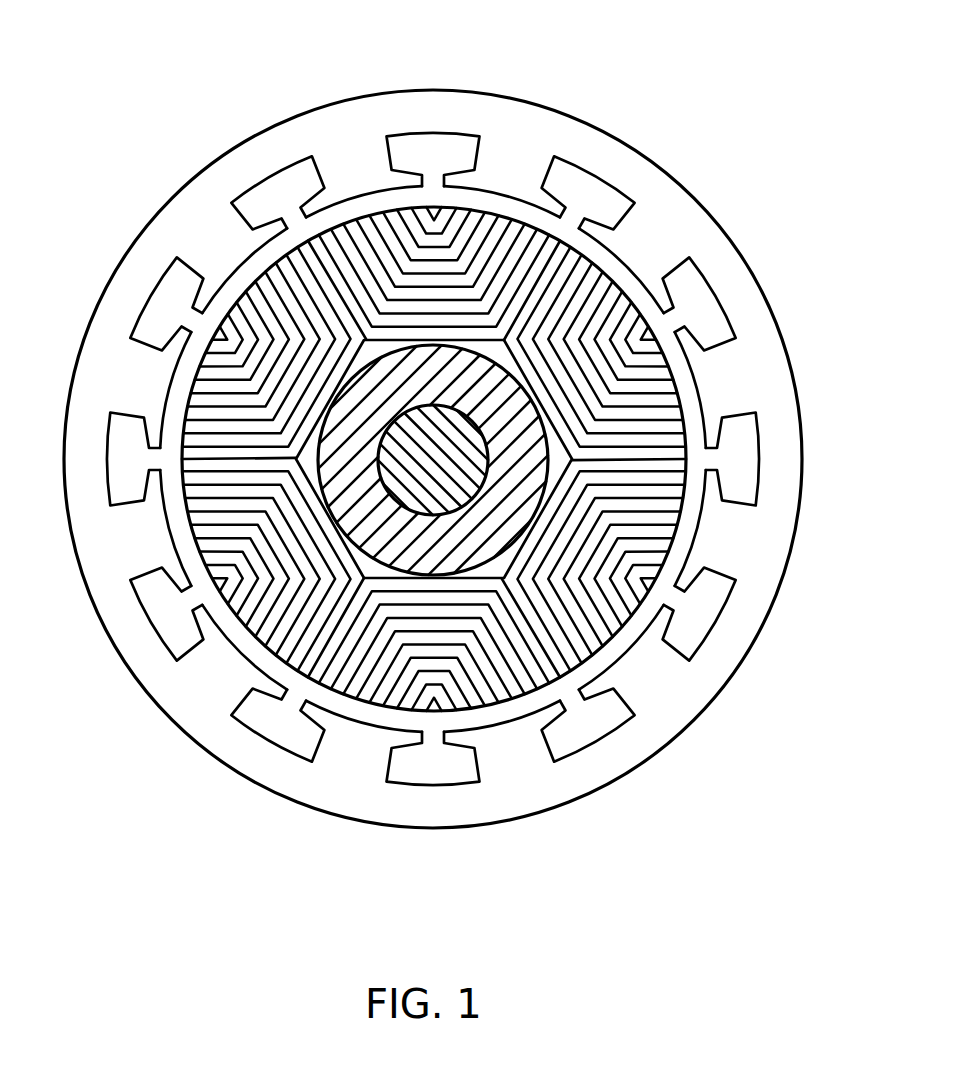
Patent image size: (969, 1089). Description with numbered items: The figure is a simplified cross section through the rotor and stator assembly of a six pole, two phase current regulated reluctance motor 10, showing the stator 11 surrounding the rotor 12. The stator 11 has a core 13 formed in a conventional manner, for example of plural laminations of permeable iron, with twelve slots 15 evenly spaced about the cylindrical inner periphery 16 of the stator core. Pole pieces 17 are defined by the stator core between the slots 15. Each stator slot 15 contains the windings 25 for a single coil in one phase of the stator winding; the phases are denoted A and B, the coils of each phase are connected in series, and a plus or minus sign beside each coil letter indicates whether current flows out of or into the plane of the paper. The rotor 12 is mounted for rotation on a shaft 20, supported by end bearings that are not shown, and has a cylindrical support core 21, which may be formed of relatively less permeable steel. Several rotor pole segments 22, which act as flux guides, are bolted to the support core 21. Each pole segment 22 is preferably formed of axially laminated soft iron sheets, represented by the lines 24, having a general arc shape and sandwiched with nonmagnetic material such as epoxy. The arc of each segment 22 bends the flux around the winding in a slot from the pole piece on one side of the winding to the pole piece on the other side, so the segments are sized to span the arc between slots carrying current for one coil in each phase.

The current regulated reluctance motor 10 is at (653, 158).
The stator 11 is at (541, 107).
The rotor 12 is at (590, 663).
The stator core 13 is at (216, 158).
The slots 15 is at (238, 723).
The cylindrical inner periphery 16 is at (170, 540).
The pole pieces 17 is at (690, 558).
The shaft 20 is at (460, 516).
The cylindrical support core 21 is at (373, 578).
The rotor pole segments 22 is at (245, 467).
The axially laminated soft iron sheets 24 is at (528, 707).
The windings 25 is at (290, 163).